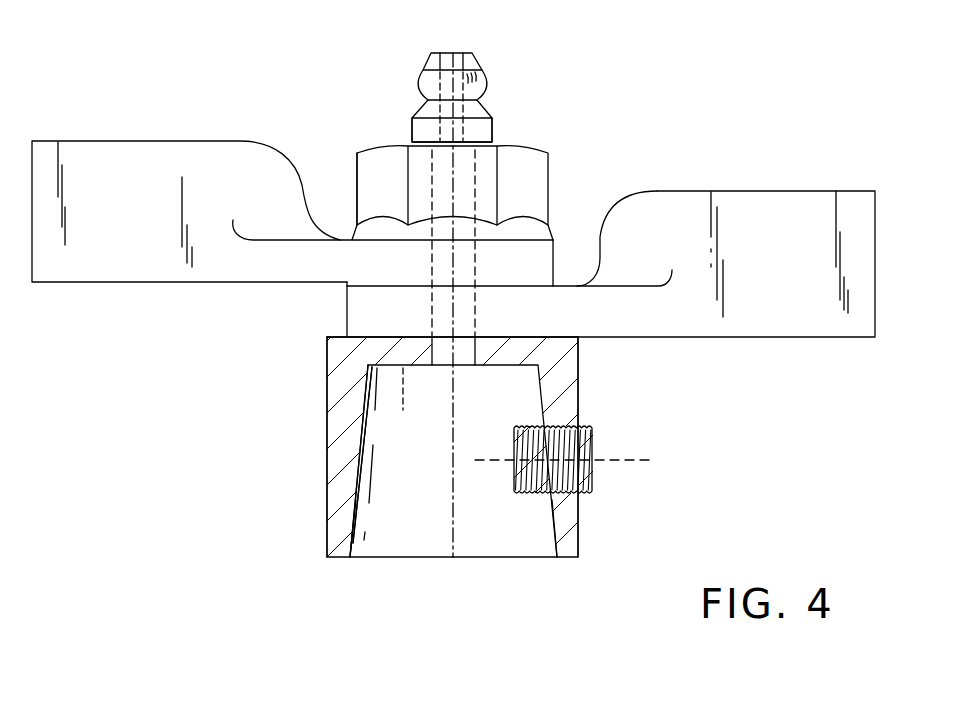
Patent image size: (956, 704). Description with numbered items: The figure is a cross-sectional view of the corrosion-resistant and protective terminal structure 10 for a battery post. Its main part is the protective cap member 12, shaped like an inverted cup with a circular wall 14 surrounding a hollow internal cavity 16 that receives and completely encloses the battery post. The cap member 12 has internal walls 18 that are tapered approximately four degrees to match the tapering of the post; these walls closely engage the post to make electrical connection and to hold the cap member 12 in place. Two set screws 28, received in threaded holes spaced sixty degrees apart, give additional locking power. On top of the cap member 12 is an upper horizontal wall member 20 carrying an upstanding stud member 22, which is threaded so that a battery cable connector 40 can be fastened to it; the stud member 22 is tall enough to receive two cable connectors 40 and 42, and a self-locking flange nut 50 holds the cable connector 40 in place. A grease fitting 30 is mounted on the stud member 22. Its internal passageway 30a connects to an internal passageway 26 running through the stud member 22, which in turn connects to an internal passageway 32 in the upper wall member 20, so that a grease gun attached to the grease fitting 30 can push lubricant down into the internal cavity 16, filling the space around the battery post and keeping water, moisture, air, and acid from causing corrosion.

The terminal structure 10 is at (447, 464).
The protective cap member 12 is at (576, 398).
The circular wall 14 is at (580, 527).
The hollow internal cavity 16 is at (503, 417).
The internal walls 18 is at (350, 545).
The upper horizontal wall member 20 is at (348, 354).
The upstanding stud member 22 is at (406, 167).
The internal passageway 26 is at (473, 193).
The set screw 28 is at (582, 450).
The grease fitting 30 is at (490, 82).
The internal passageway of grease fitting 30a is at (454, 138).
The internal passageway of upper wall member 32 is at (439, 367).
The battery cable connector 40 is at (804, 274).
The battery cable connector 42 is at (127, 218).
The flange nut 50 is at (367, 178).